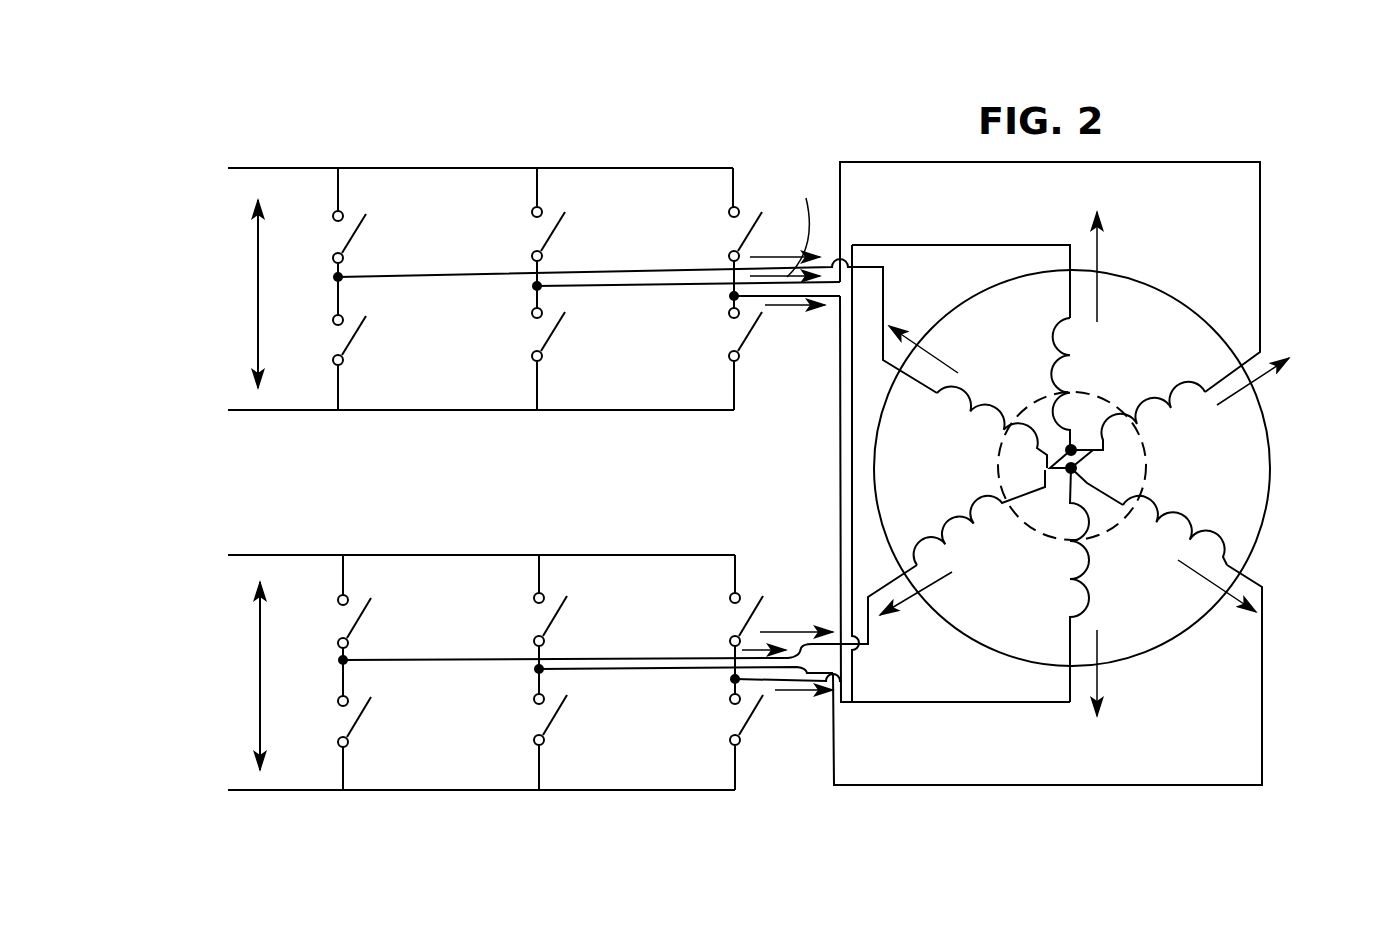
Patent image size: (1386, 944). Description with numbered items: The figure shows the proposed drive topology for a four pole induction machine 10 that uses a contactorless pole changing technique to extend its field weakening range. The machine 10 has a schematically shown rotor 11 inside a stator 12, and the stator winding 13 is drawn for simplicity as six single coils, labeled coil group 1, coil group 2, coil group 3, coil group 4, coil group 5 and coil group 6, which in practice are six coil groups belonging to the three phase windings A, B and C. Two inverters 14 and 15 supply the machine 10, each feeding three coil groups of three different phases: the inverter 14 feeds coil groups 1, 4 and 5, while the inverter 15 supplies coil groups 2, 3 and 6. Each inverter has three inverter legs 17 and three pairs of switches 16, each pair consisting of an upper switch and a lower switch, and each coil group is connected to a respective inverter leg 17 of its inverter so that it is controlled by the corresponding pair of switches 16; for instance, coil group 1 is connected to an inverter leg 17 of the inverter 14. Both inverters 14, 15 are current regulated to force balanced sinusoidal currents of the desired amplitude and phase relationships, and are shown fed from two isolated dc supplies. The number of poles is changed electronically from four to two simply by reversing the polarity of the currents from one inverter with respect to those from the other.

The induction machine 10 is at (636, 90).
The rotor 11 is at (1150, 485).
The stator 12 is at (1276, 447).
The stator winding 13 is at (1232, 532).
The inverter 14 is at (416, 800).
The inverter 15 is at (421, 157).
The switches 16 is at (366, 214).
The inverter leg 17 is at (530, 300).
The coil group 1 is at (1217, 600).
The coil group 2 is at (923, 364).
The coil group 3 is at (1256, 351).
The coil group 4 is at (916, 573).
The coil group 5 is at (1087, 265).
The coil group 6 is at (1092, 685).